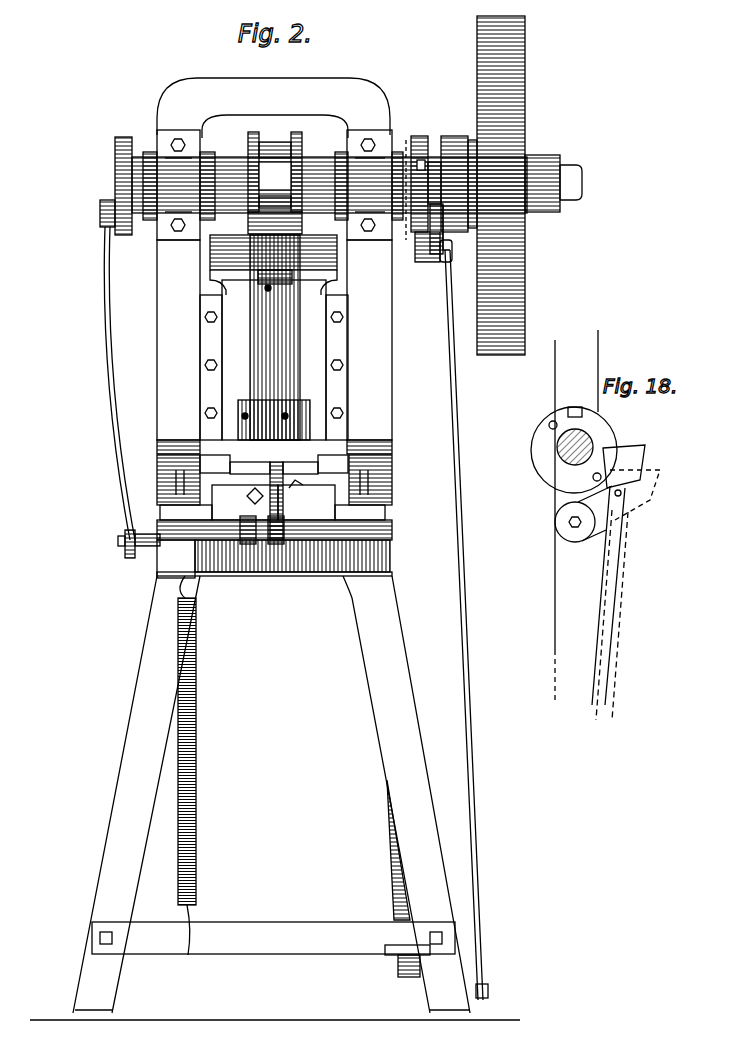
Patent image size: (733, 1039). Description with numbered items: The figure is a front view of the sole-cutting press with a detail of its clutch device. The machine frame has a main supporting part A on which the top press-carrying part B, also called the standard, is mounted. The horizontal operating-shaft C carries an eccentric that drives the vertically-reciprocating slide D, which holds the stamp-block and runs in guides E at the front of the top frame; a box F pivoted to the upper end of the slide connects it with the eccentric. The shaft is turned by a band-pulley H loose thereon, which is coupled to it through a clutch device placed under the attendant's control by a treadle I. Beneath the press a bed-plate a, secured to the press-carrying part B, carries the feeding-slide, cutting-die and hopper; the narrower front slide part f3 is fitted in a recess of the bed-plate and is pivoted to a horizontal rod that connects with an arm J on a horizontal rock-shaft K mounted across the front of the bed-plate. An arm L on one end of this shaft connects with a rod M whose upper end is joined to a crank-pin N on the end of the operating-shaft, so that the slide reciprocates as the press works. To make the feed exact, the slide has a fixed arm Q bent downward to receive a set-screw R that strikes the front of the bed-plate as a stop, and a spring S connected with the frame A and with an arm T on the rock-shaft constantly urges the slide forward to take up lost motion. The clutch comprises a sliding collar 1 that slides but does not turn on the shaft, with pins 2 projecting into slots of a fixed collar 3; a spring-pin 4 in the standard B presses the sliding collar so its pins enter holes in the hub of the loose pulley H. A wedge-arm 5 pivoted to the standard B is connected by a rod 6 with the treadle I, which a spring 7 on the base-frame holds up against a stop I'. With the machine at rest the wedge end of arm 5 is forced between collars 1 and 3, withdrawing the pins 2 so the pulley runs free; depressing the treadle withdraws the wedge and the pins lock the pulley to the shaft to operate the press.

In FIG. 2, the main supporting part A is at (275, 798).
In FIG. 2, the top press-carrying part B is at (274, 292).
In FIG. 18, the top press-carrying part B is at (576, 515).
In FIG. 2, the operating-shaft C is at (357, 181).
In FIG. 2, the vertically-reciprocating slide D is at (273, 337).
In FIG. 2, the guides E is at (274, 367).
In FIG. 2, the box F is at (275, 183).
In FIG. 2, the band-pulley H is at (509, 185).
In FIG. 2, the treadle I is at (407, 953).
In FIG. 2, the stop I' is at (273, 938).
In FIG. 2, the arm J is at (271, 501).
In FIG. 2, the rock-shaft K is at (274, 546).
In FIG. 2, the arm L is at (139, 555).
In FIG. 2, the rod M is at (115, 383).
In FIG. 2, the crank-pin N is at (104, 186).
In FIG. 2, the fixed arm Q is at (255, 488).
In FIG. 2, the set-screw R is at (245, 502).
In FIG. 2, the spring S is at (193, 765).
In FIG. 2, the arm T is at (176, 559).
In FIG. 2, the bed-plate a is at (272, 503).
In FIG. 2, the front slide part f3 is at (296, 490).
In FIG. 2, the sliding collar 1 is at (419, 175).
In FIG. 18, the sliding collar 1 is at (574, 450).
In FIG. 2, the pins 2 is at (435, 202).
In FIG. 18, the pins 2 is at (570, 458).
In FIG. 2, the fixed collar 3 is at (459, 175).
In FIG. 2, the spring-pin 4 is at (401, 183).
In FIG. 2, the wedge-arm 5 is at (428, 256).
In FIG. 18, the wedge-arm 5 is at (631, 482).
In FIG. 2, the rod 6 is at (464, 602).
In FIG. 18, the rod 6 is at (591, 603).
In FIG. 2, the spring 7 is at (391, 830).